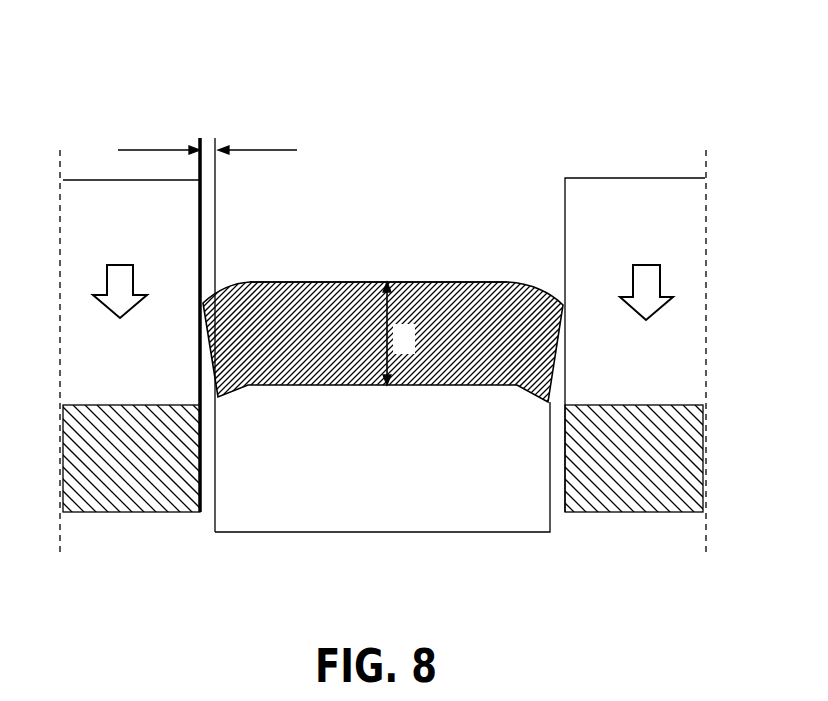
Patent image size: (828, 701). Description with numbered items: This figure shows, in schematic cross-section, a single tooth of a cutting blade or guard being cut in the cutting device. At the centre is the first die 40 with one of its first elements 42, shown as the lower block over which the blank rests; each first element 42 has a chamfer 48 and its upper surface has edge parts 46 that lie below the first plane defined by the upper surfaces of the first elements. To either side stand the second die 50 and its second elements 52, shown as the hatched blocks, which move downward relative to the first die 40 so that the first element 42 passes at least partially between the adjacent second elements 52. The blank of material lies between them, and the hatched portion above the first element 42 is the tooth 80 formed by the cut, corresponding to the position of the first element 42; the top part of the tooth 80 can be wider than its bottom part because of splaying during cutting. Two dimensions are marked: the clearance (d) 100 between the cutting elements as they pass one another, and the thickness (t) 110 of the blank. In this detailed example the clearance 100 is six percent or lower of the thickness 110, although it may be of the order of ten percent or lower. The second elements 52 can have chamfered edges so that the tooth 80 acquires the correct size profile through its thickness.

The clearance 100 is at (249, 123).
The teeth of the cutting blade or guard 80 is at (315, 323).
The thickness of the blank 110 is at (414, 307).
The second die 50 is at (402, 325).
The second elements 52 is at (620, 220).
The edge parts 46 is at (277, 368).
The chamfer 48 is at (218, 397).
The first die 40 is at (382, 378).
The first elements 42 is at (382, 378).